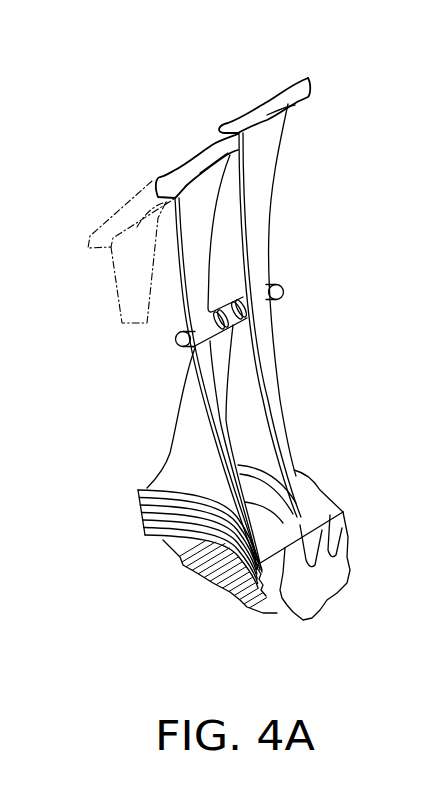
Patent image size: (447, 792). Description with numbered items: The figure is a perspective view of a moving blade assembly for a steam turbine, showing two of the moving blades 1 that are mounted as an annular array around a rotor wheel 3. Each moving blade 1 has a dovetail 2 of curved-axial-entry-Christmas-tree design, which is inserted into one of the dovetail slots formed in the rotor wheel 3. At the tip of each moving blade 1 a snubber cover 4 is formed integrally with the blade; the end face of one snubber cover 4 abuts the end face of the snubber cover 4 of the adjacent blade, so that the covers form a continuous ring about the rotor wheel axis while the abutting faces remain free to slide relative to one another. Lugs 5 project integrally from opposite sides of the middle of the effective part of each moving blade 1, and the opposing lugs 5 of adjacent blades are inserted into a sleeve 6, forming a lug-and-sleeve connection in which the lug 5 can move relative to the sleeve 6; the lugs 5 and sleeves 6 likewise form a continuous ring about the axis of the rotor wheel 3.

The moving blade 1 is at (262, 217).
The dovetail 2 is at (282, 578).
The rotor wheel 3 is at (342, 538).
The snubber cover 4 is at (300, 80).
The lug 5 is at (284, 292).
The sleeve 6 is at (237, 322).